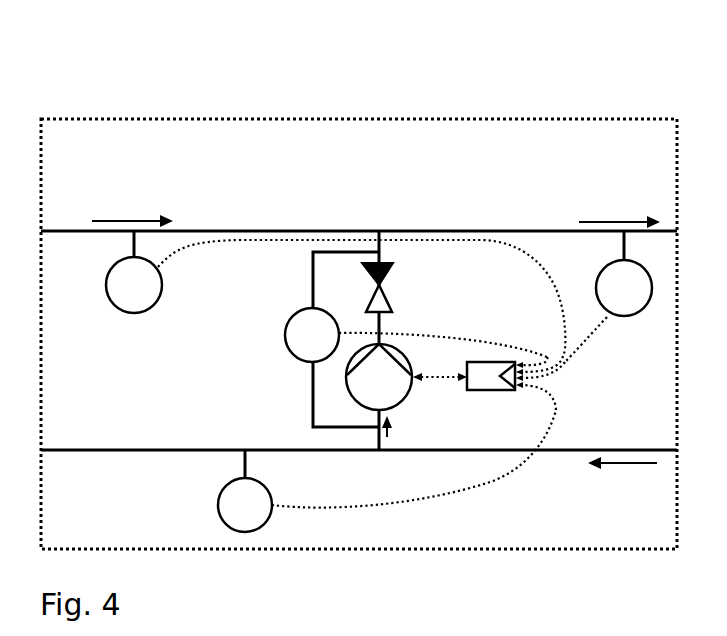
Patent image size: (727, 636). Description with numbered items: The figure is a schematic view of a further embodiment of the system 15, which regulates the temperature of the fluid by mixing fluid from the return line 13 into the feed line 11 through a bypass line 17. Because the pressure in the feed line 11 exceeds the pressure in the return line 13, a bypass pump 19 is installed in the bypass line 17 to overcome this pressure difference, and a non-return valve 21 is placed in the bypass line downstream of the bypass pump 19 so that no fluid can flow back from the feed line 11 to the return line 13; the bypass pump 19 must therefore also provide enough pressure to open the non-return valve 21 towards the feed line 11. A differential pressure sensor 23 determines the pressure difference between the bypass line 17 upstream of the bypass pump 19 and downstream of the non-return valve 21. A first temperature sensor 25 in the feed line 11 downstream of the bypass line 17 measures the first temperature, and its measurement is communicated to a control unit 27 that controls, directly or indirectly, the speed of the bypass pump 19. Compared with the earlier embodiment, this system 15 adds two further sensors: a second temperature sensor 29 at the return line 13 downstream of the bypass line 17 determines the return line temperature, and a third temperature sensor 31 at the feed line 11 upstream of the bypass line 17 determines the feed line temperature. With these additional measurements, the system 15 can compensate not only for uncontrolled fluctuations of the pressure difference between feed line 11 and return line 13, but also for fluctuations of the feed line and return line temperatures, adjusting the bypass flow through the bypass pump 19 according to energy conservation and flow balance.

The feed line 11 is at (204, 222).
The return line 13 is at (110, 455).
The system 15 is at (143, 88).
The bypass line 17 is at (378, 434).
The bypass pump 19 is at (379, 377).
The non-return valve 21 is at (393, 285).
The differential pressure sensor 23 is at (283, 309).
The first temperature sensor 25 is at (620, 325).
The control unit 27 is at (477, 393).
The second temperature sensor 29 is at (210, 503).
The third temperature sensor 31 is at (115, 313).